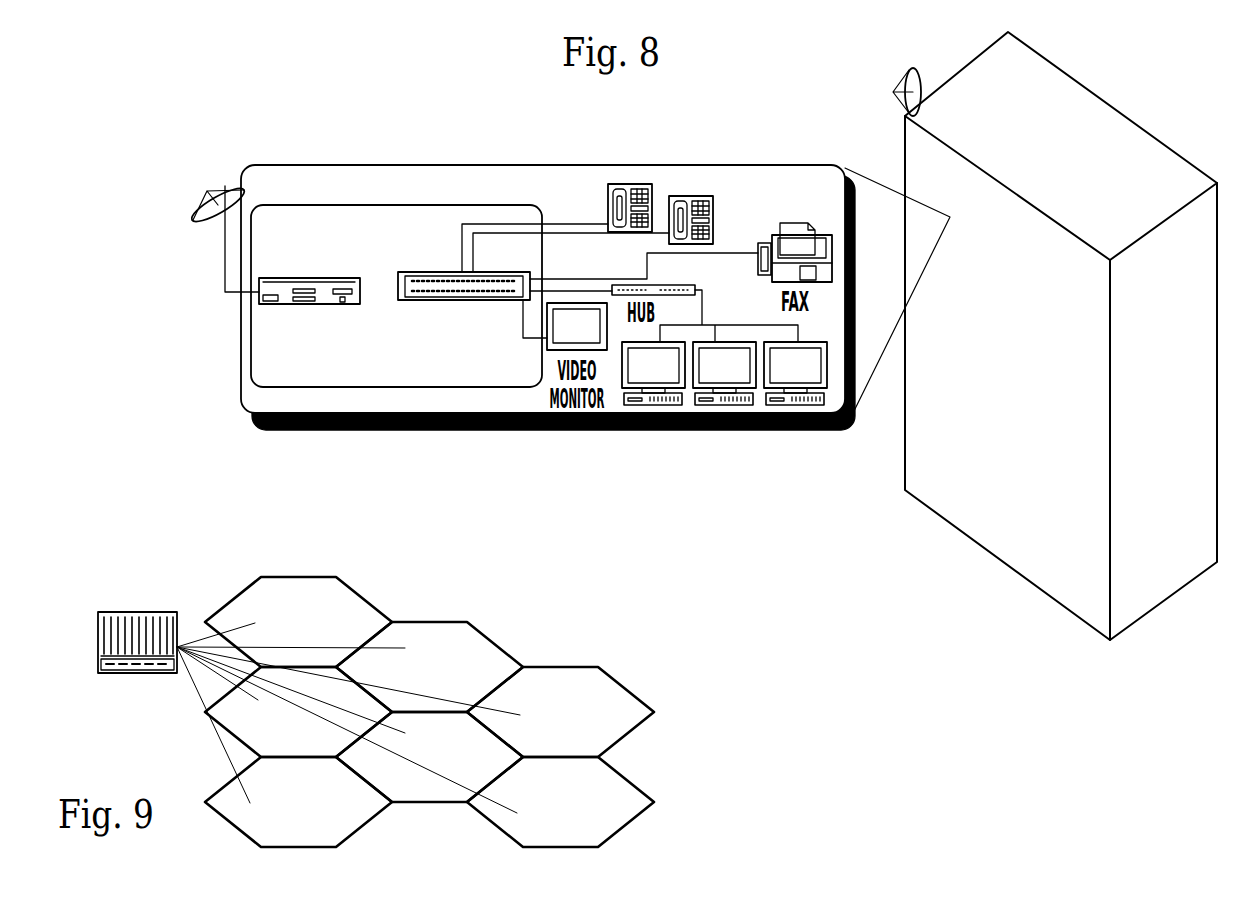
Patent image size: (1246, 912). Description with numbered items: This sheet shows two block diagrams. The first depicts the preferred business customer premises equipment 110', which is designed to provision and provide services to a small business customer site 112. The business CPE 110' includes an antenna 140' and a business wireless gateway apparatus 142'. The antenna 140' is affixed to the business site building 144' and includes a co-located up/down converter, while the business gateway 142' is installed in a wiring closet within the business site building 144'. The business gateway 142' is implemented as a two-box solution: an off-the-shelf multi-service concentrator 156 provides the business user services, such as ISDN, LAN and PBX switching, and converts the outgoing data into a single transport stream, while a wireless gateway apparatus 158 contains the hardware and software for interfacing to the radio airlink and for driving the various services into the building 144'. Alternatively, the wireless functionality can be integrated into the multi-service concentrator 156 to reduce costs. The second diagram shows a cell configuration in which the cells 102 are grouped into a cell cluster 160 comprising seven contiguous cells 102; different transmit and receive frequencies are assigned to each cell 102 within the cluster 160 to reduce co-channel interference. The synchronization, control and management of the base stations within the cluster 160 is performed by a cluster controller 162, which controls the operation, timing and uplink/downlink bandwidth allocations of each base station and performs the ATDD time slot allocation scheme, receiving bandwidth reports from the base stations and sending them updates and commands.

In FIG. 8, the business customer premises equipment 110' is at (595, 340).
In FIG. 8, the business wireless gateway apparatus 142' is at (396, 253).
In FIG. 8, the wireless gateway apparatus 158 is at (290, 294).
In FIG. 8, the multi-service concentrator 156 is at (459, 272).
In FIG. 8, the antenna 140' is at (902, 70).
In FIG. 8, the business site building 144' is at (1061, 332).
In FIG. 8, the small business customer site 112 is at (963, 533).
In FIG. 9, the cell 102 is at (300, 583).
In FIG. 9, the cell cluster 160 is at (622, 825).
In FIG. 9, the cluster controller 162 is at (143, 673).